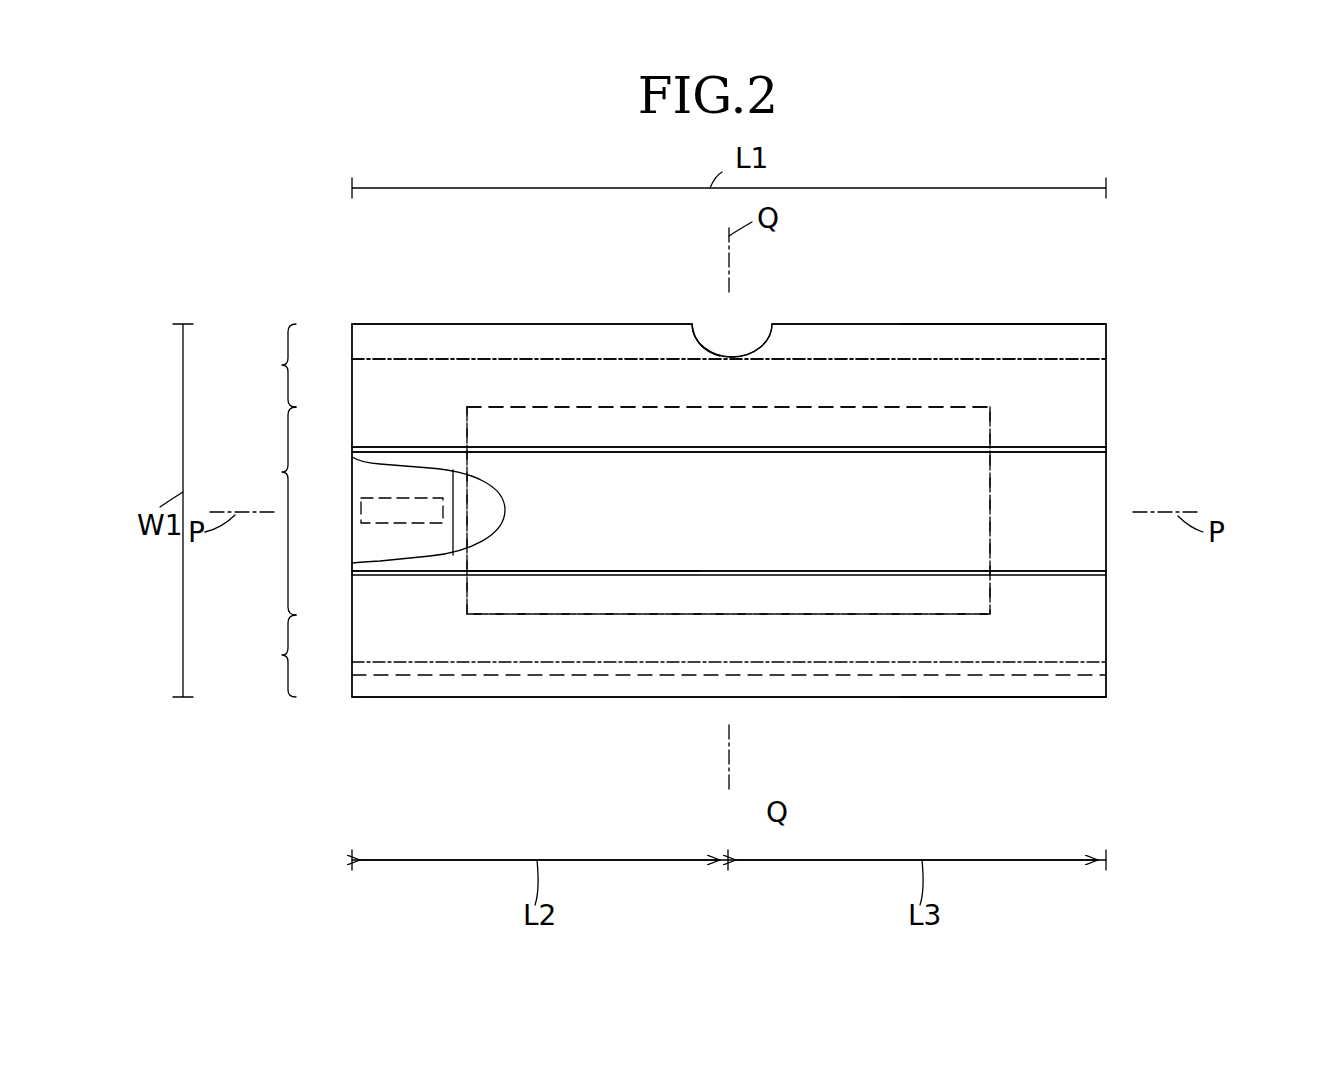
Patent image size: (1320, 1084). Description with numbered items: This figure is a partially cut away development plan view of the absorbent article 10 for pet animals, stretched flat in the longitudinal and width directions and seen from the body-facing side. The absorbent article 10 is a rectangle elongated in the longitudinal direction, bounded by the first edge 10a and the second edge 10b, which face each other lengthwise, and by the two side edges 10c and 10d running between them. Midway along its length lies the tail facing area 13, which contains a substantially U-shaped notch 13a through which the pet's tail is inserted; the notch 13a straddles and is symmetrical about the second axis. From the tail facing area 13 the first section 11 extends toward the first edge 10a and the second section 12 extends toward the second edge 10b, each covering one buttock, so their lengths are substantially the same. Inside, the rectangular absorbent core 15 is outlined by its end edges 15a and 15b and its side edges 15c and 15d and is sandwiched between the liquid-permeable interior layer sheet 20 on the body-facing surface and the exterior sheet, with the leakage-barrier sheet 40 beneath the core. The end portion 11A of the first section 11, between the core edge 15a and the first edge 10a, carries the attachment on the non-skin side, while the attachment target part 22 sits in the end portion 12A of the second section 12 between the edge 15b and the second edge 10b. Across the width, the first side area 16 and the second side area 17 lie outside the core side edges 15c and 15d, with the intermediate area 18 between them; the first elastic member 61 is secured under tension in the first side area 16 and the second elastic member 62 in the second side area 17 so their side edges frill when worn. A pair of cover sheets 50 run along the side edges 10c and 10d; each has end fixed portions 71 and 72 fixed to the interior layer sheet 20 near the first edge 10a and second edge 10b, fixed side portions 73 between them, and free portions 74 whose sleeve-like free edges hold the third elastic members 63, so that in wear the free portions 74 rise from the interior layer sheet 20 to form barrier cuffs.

The absorbent article 10 is at (1093, 285).
The first edge 10a is at (352, 388).
The second edge 10b is at (1106, 600).
The side edge 10c is at (618, 697).
The side edge 10d is at (550, 324).
The first section 11 is at (575, 860).
The end portion of the first section 11A is at (385, 542).
The second section 12 is at (956, 860).
The end portion of the second section 12A is at (1085, 632).
The tail facing area 13 is at (770, 326).
The notch 13a is at (706, 345).
The absorbent core 15 is at (480, 520).
The edge of the absorbent core 15a is at (463, 497).
The edge of the absorbent core 15b is at (990, 488).
The side edge of the absorbent core 15c is at (885, 615).
The side edge of the absorbent core 15d is at (915, 405).
The first side area 16 is at (268, 656).
The second side area 17 is at (268, 365).
The intermediate area 18 is at (268, 511).
The liquid-permeable interior layer sheet 20 is at (590, 540).
The attachment target part 22 is at (1085, 470).
The leakage-barrier sheet 40 is at (455, 558).
The cover sheet 50 is at (935, 340).
The first elastic member 61 is at (748, 676).
The second elastic member 62 is at (483, 375).
The third elastic member 63 is at (810, 450).
The end fixed portion 71 is at (418, 378).
The end fixed portion 72 is at (1090, 402).
The fixed side portion 73 is at (610, 340).
The free portion 74 is at (752, 430).